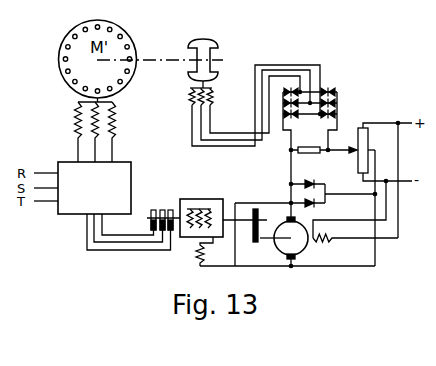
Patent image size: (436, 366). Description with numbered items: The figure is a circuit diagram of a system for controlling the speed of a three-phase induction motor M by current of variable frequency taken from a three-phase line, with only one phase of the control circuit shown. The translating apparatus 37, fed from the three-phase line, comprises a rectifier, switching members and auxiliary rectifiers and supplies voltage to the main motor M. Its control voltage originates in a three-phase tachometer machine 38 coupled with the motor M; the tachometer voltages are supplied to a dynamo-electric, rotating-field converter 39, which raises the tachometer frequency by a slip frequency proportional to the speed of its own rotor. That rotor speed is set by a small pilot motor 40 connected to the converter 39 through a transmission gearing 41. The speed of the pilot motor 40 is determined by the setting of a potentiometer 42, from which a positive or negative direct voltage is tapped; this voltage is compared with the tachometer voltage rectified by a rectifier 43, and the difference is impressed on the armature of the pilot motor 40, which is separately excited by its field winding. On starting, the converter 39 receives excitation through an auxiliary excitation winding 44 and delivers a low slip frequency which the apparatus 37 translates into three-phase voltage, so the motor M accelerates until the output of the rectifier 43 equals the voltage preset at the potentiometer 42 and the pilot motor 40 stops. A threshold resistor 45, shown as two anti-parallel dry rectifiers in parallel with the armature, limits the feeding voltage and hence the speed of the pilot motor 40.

The translating apparatus 37 is at (104, 199).
The three-phase tachometer machine 38 is at (240, 99).
The rotating-field converter 39 is at (176, 196).
The pilot motor 40 is at (302, 236).
The transmission gearing 41 is at (257, 233).
The potentiometer 42 is at (366, 146).
The rectifier 43 is at (335, 110).
The auxiliary excitation winding 44 is at (198, 250).
The threshold resistor 45 is at (320, 190).